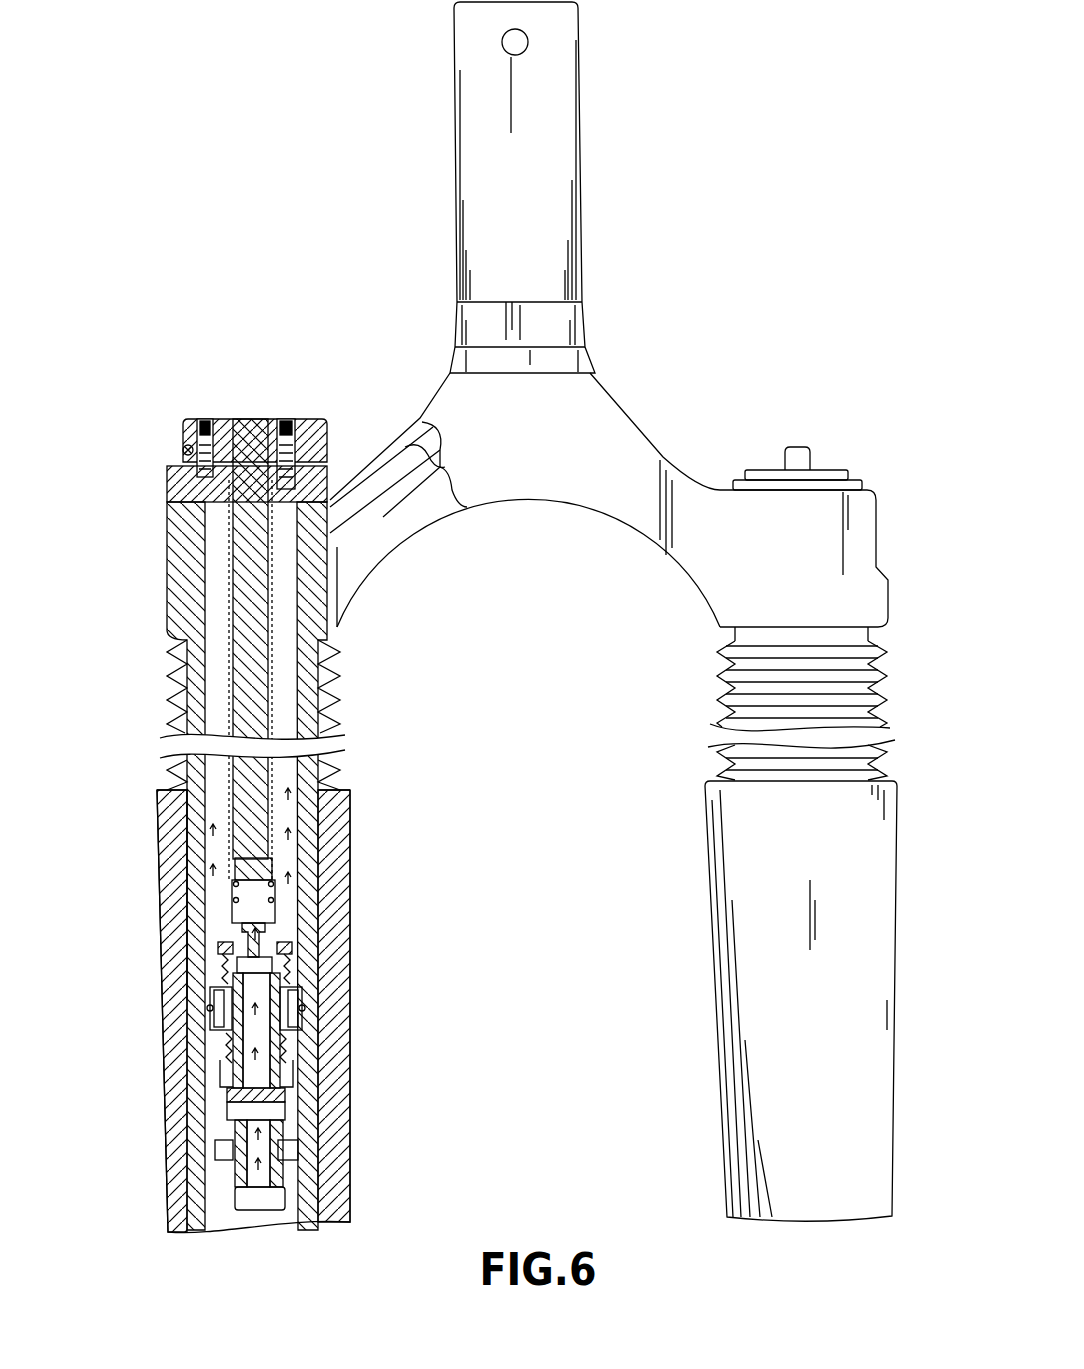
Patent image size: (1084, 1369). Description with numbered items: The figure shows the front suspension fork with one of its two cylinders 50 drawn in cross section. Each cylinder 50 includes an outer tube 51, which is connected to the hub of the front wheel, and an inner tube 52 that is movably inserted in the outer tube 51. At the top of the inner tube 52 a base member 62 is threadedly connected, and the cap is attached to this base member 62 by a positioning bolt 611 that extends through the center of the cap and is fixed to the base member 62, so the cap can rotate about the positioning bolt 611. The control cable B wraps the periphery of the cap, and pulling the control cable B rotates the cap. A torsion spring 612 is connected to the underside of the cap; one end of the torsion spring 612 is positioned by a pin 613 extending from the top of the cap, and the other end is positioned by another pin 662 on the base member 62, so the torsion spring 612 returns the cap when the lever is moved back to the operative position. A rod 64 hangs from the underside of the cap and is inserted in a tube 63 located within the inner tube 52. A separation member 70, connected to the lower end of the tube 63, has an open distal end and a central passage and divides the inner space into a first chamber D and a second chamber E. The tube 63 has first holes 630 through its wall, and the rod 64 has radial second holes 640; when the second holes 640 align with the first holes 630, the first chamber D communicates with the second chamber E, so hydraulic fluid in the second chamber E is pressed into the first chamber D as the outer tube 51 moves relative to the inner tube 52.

The cylinder 50 is at (280, 775).
The outer tube 51 is at (750, 935).
The inner tube 52 is at (200, 822).
The base member 62 is at (175, 500).
The tube 63 is at (335, 765).
The rod 64 is at (310, 660).
The separation member 70 is at (205, 1003).
The positioning bolt 611 is at (244, 419).
The torsion spring 612 is at (300, 419).
The pin 613 is at (205, 419).
The first holes 630 is at (275, 912).
The second holes 640 is at (245, 906).
The pin 662 is at (362, 518).
The control cable B is at (183, 447).
The first chamber D is at (220, 882).
The second chamber E is at (220, 1060).